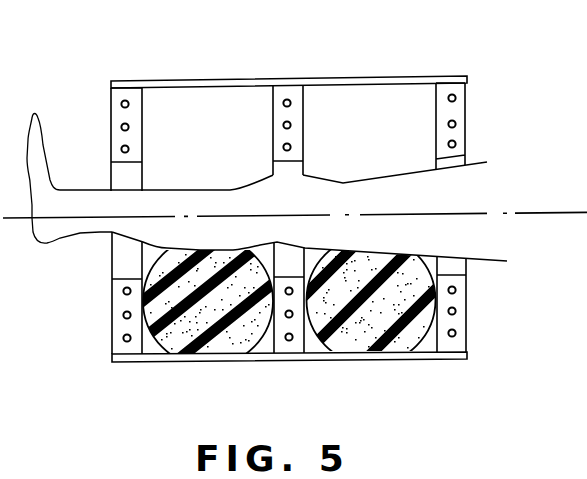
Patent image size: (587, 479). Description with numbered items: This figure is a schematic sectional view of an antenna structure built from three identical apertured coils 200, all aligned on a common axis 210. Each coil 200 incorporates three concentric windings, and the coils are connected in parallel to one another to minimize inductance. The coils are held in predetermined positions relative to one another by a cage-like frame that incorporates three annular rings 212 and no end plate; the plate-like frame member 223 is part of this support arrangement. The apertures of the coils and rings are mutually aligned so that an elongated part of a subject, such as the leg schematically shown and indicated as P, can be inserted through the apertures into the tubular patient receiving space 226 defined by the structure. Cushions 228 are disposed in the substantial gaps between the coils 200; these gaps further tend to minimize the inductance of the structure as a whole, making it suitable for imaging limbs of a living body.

The apertured coil 200 is at (104, 107).
The common axis 210 is at (491, 212).
The annular ring 212 is at (116, 86).
The mounting plate 223 is at (343, 60).
The tubular patient receiving space 226 is at (202, 174).
The cushion 228 is at (231, 331).
The pipe / profile P is at (492, 240).